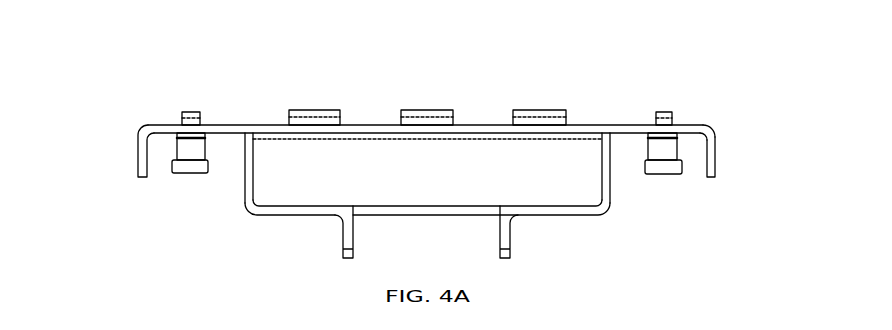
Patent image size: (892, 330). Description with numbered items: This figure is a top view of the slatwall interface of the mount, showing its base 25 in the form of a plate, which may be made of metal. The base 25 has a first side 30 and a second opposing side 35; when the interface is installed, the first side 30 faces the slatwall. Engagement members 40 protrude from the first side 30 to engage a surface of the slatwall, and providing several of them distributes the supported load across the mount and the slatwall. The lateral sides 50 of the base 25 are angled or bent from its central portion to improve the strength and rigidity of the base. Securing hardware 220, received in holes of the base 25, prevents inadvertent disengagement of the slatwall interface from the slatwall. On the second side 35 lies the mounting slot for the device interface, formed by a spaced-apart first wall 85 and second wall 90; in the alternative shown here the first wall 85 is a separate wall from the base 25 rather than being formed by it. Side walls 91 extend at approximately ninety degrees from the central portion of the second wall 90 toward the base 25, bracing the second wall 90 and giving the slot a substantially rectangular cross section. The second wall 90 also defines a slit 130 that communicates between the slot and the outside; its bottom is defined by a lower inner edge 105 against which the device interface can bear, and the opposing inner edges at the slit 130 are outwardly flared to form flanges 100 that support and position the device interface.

The base 25 is at (690, 128).
The first side 30 is at (624, 124).
The second opposing side 35 is at (629, 133).
The engagement member 40 is at (313, 110).
The lateral sides 50 is at (138, 163).
The first wall 85 is at (448, 140).
The second wall 90 is at (553, 213).
The side walls 91 is at (245, 170).
The flanges 100 is at (343, 240).
The lower inner edge 105 is at (375, 208).
The slit 130 is at (429, 238).
The securing hardware 220 is at (192, 112).